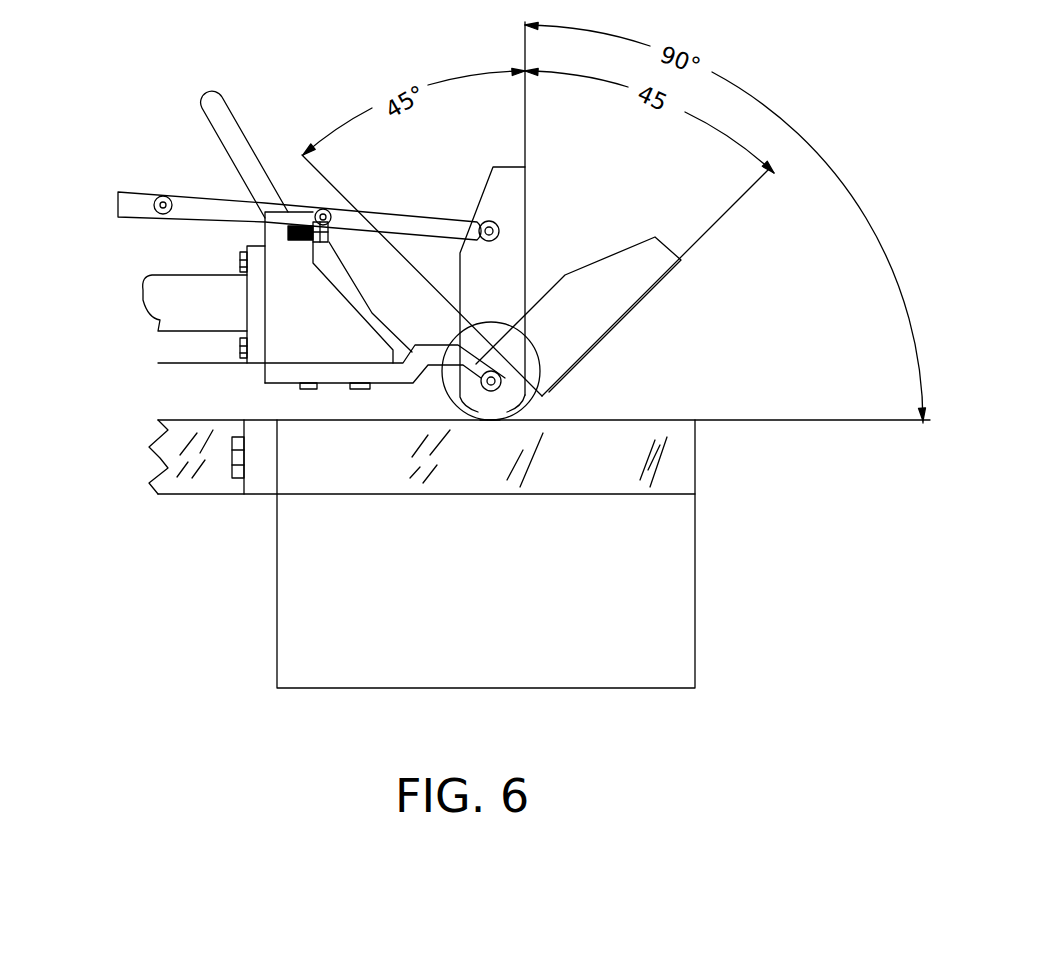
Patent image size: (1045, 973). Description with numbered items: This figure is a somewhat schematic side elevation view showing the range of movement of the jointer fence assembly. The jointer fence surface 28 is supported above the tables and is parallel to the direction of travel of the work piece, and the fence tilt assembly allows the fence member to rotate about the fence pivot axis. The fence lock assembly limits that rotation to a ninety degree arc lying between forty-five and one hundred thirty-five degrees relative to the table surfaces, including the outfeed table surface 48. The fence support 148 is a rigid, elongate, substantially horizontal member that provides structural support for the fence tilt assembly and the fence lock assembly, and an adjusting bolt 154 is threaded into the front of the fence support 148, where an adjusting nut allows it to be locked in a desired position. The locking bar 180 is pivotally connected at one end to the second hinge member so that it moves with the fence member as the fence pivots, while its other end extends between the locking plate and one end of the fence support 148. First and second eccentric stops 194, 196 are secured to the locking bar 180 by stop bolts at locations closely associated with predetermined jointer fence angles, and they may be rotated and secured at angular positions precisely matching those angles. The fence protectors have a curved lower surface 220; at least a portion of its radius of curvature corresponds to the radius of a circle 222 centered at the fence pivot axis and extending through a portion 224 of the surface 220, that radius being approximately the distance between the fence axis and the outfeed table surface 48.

The jointer fence surface 28 is at (527, 208).
The fence support 148 is at (288, 213).
The adjusting bolt 154 is at (327, 244).
The locking bar 180 is at (401, 219).
The first eccentric stop 194 is at (158, 191).
The second eccentric stop 196 is at (328, 207).
The curved lower surface 220 is at (538, 406).
The circle 222 is at (542, 360).
The portion of the surface 224 is at (490, 423).
The outfeed table surface 48 is at (664, 419).